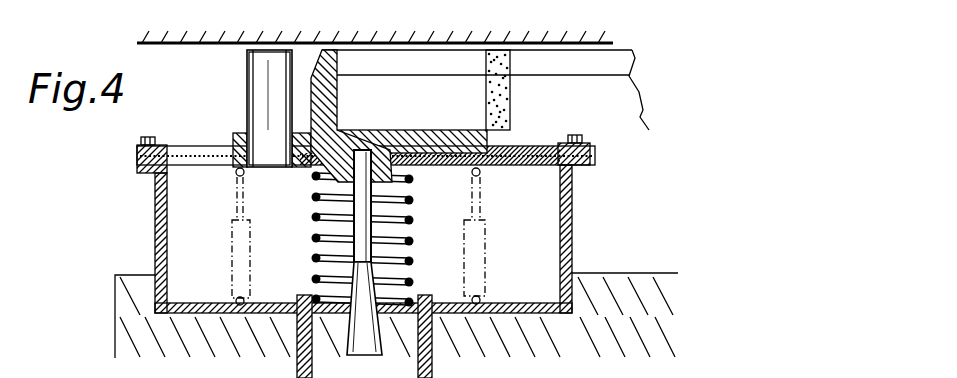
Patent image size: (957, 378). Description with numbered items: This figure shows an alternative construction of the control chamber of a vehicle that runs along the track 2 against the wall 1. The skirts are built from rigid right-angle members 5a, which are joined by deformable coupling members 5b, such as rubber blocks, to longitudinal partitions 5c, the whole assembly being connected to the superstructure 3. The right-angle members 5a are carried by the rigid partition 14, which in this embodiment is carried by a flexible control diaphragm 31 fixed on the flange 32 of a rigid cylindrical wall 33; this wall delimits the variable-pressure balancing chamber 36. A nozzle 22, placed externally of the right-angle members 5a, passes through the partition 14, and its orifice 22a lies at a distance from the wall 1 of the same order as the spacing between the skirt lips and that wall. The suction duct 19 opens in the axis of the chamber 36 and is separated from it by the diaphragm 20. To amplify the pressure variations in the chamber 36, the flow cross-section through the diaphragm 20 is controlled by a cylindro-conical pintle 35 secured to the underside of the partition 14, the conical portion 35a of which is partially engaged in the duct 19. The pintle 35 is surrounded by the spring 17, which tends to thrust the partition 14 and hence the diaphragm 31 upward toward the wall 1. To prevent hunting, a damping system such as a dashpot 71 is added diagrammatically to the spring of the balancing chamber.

The wall 1 is at (172, 46).
The track 2 is at (157, 41).
The superstructure 3 is at (125, 324).
The right-angle members 5a is at (331, 105).
The deformable coupling members 5b is at (503, 83).
The longitudinal partitions 5c is at (580, 60).
The partition 14 is at (410, 143).
The spring 17 is at (390, 220).
The suction duct 19 is at (424, 368).
The diaphragm 20 is at (307, 308).
The nozzle 22 is at (247, 104).
The orifice of the nozzle 22a is at (256, 50).
The flexible control diaphragm 31 is at (504, 155).
The flange 32 is at (148, 163).
The rigid cylindrical wall 33 is at (166, 249).
The cylindro-conical pintle 35 is at (364, 270).
The conical portion of the pintle 35a is at (370, 352).
The variable-pressure balancing chamber 36 is at (190, 257).
The dashpot 71 is at (485, 263).